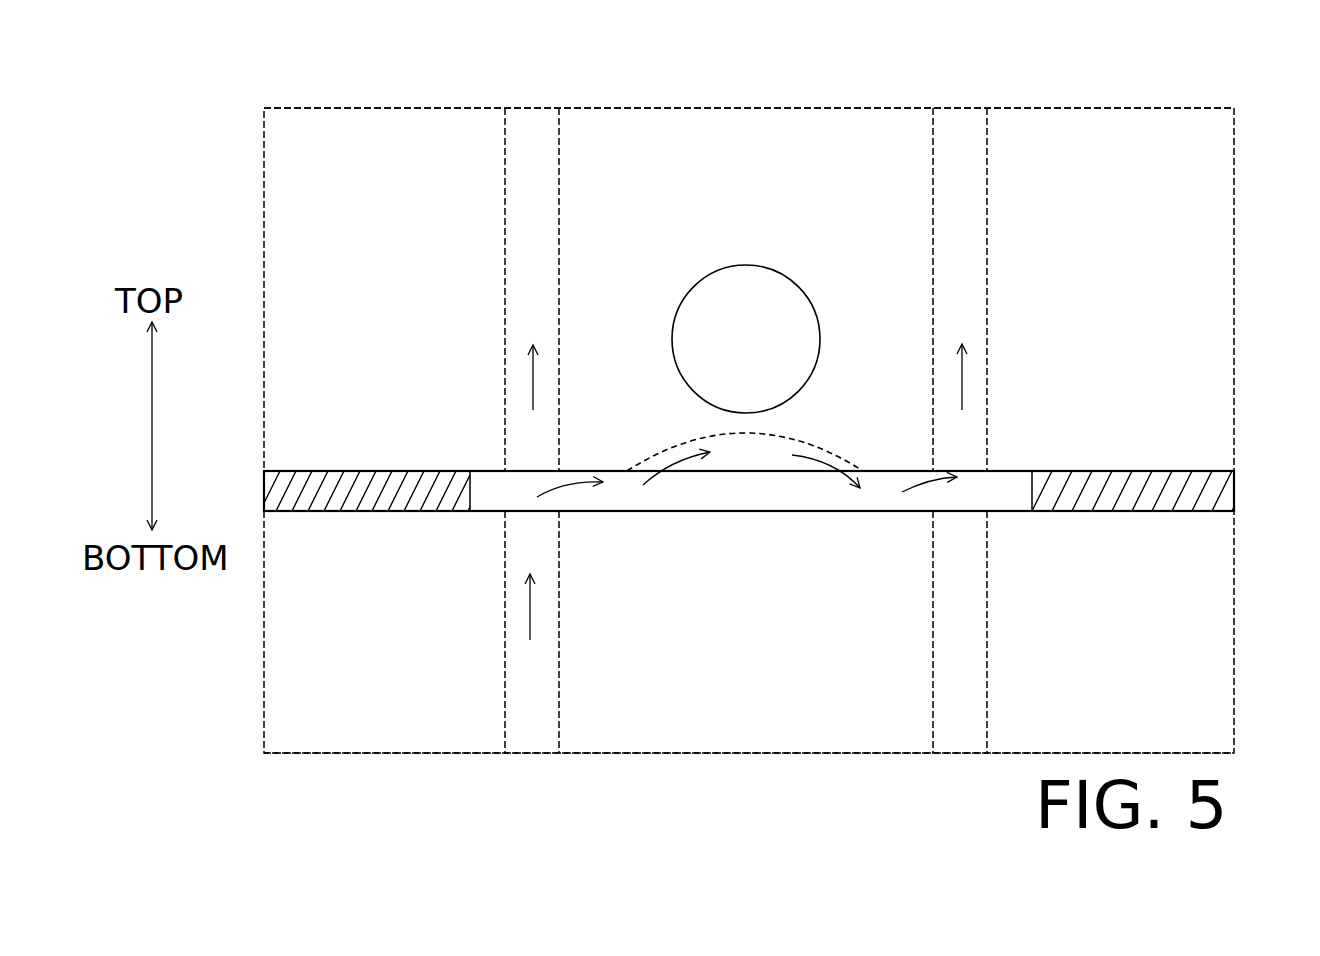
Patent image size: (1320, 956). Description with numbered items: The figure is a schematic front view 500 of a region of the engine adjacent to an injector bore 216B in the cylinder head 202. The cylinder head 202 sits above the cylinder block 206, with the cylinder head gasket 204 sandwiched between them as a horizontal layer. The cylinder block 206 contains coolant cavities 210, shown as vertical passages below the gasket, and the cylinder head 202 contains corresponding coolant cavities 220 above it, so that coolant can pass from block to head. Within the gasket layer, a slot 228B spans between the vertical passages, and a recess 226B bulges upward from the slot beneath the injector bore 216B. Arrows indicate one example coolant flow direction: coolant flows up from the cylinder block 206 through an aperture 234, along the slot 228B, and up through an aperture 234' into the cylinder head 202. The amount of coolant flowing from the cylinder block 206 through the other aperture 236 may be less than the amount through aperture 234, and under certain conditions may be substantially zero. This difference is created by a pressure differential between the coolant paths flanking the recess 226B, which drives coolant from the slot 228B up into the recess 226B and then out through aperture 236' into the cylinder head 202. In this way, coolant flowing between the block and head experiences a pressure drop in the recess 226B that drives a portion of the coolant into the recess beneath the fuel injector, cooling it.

The front view 500 is at (264, 216).
The cylinder head 202 is at (1188, 243).
The cylinder head gasket 204 is at (1205, 490).
The cylinder block 206 is at (1200, 675).
The coolant cavities 210 is at (560, 605).
The coolant cavities 220 is at (505, 215).
The injector bore 216B is at (672, 338).
The recess 226B is at (800, 435).
The slot 228B is at (720, 493).
The aperture 234 is at (474, 555).
The aperture 234' is at (462, 444).
The aperture 236 is at (1028, 556).
The aperture 236' is at (1021, 440).